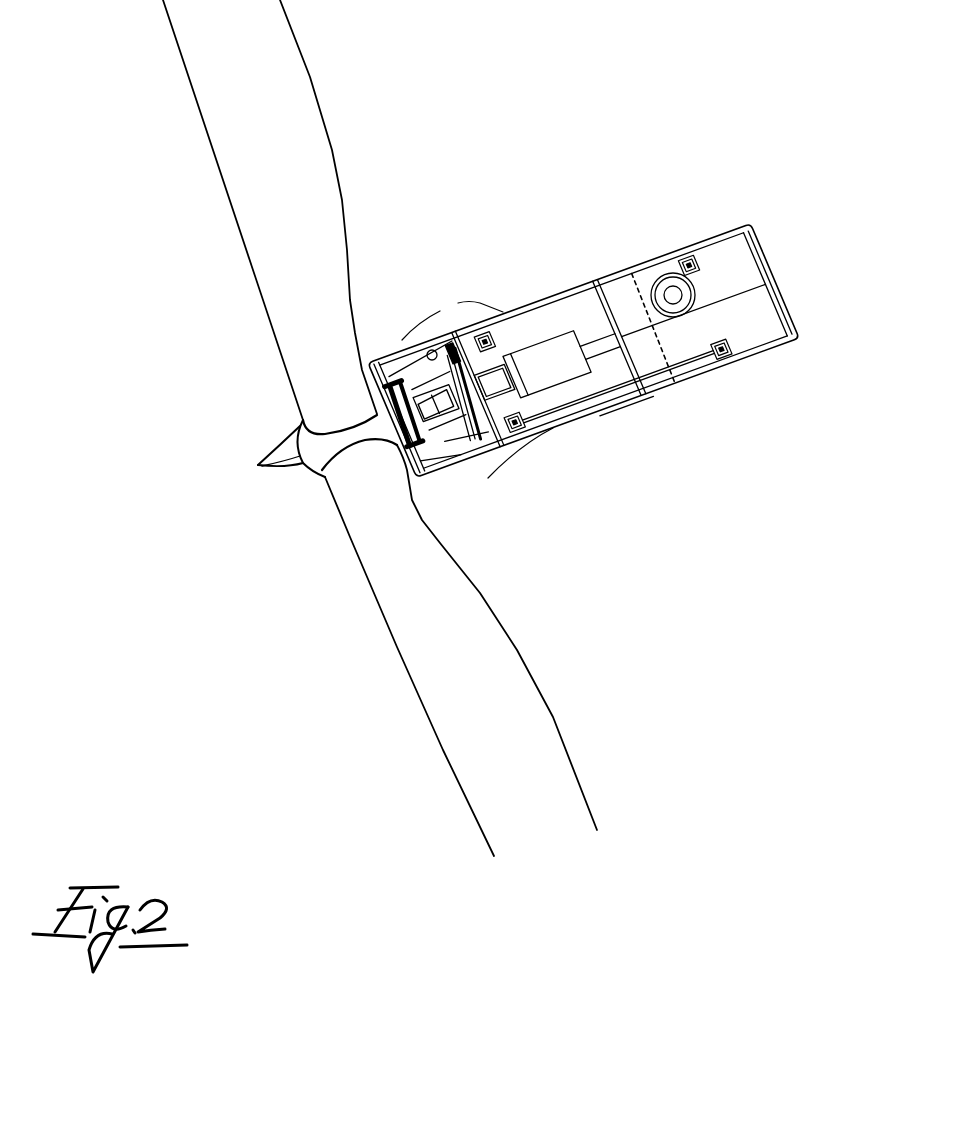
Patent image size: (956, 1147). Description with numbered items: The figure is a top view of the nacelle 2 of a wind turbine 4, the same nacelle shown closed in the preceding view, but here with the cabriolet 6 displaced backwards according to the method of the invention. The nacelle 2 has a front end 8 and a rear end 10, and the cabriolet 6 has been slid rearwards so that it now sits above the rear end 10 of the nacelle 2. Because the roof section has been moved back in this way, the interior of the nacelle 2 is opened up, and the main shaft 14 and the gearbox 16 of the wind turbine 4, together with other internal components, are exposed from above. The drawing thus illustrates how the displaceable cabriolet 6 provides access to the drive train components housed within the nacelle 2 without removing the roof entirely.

The nacelle 2 is at (389, 353).
The wind turbine 4 is at (453, 216).
The cabriolet 6 is at (740, 268).
The front end 8 is at (400, 468).
The rear end 10 is at (683, 393).
The main shaft 14 is at (437, 410).
The gearbox 16 is at (462, 405).